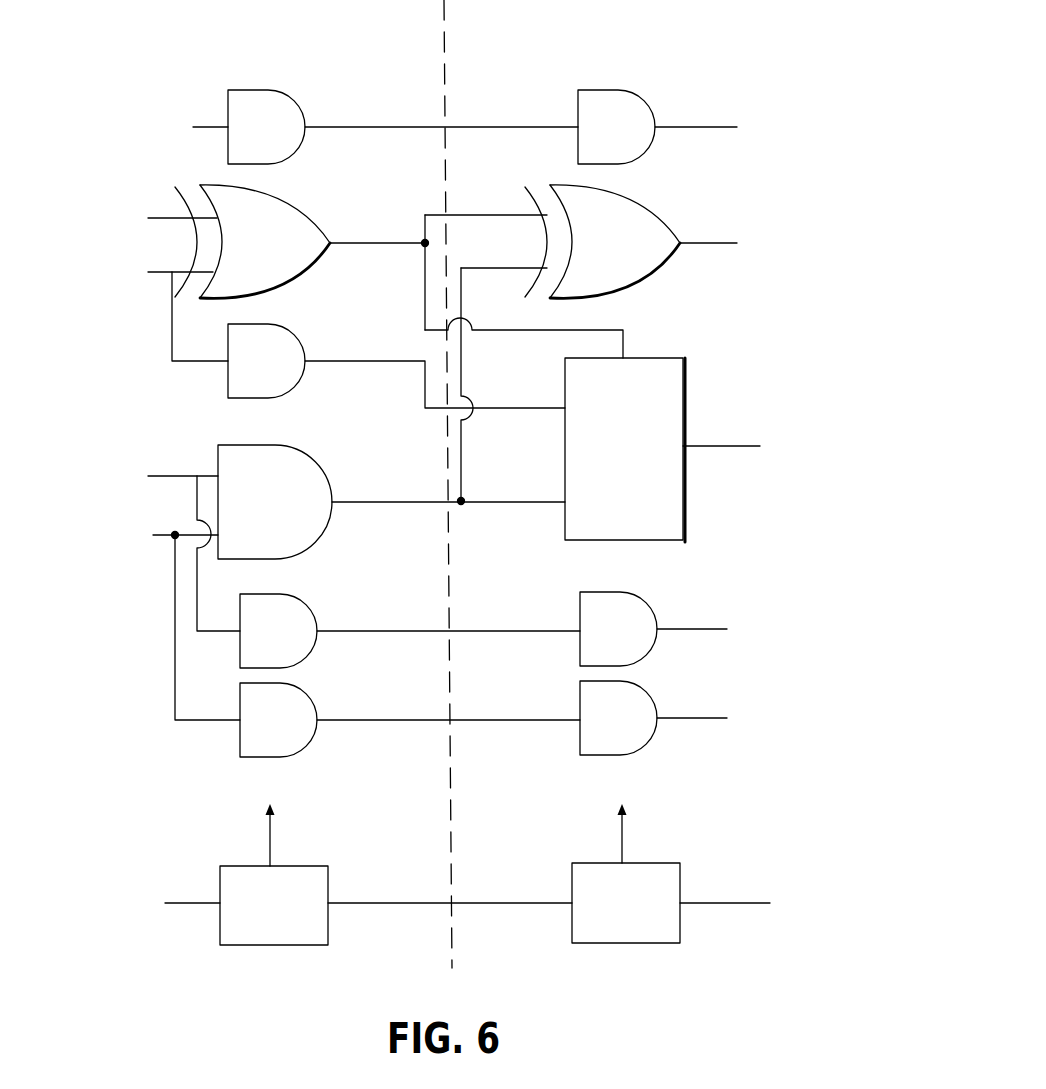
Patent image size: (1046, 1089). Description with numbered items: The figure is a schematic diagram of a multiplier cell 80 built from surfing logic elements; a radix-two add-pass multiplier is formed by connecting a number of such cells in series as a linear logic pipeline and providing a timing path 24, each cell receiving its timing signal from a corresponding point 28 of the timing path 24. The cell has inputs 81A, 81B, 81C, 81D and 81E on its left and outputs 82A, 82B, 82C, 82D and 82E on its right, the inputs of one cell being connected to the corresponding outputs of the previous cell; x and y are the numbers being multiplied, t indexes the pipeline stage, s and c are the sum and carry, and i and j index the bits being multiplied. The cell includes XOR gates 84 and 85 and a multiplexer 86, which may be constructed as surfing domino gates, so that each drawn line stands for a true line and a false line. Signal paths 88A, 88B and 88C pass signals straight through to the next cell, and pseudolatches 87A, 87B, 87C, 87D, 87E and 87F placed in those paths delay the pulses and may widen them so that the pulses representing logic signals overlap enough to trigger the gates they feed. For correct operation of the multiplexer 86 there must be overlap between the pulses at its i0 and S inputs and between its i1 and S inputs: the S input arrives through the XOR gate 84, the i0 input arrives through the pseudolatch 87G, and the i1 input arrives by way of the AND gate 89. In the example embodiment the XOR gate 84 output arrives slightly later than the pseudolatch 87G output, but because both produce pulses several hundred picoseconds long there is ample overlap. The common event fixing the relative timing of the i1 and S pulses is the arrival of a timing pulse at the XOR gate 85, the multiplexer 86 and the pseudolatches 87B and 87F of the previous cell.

The multiplier cell 80 is at (203, 69).
The input 81A is at (172, 474).
The input 81B is at (160, 542).
The input 81C is at (155, 274).
The input 81D is at (160, 215).
The input 81E is at (208, 126).
The output 82A is at (690, 628).
The output 82B is at (697, 720).
The output 82C is at (710, 243).
The output 82D is at (722, 445).
The output 82E is at (670, 125).
The XOR gate 84 is at (307, 205).
The XOR gate 85 is at (662, 205).
The multiplexer 86 is at (645, 358).
The pseudolatch 87A is at (258, 90).
The pseudolatch 87B is at (608, 88).
The pseudolatch 87C is at (341, 590).
The pseudolatch 87D is at (580, 602).
The pseudolatch 87E is at (343, 685).
The pseudolatch 87F is at (580, 700).
The pseudolatch 87G is at (300, 325).
The signal path 88A is at (465, 79).
The signal path 88B is at (479, 597).
The signal path 88C is at (494, 727).
The AND gate 89 is at (318, 447).
The timing path 24 is at (194, 891).
The point 28 is at (270, 852).